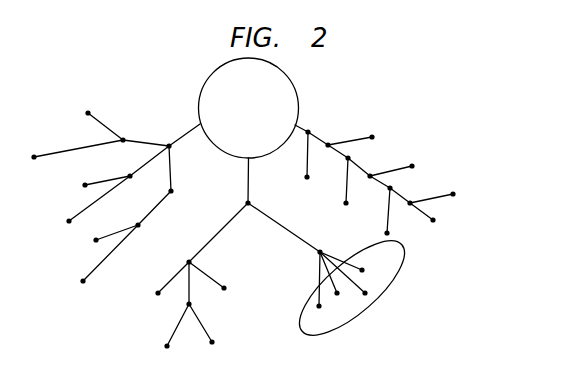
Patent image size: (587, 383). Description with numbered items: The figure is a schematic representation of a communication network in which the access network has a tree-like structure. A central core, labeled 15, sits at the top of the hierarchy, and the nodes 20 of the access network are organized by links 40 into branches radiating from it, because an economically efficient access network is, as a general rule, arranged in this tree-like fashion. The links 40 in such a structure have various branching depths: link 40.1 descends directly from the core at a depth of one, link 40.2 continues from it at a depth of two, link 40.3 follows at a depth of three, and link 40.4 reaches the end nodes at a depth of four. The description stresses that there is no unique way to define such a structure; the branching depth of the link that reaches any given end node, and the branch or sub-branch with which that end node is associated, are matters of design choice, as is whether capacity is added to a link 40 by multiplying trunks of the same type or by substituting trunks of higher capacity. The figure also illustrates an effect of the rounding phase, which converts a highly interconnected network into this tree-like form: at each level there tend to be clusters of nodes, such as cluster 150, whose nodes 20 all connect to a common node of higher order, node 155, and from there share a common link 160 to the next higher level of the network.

The core 15 is at (197, 100).
The node 20 is at (88, 112).
The link 40 is at (173, 181).
The link of branching depth one 40.1 is at (247, 186).
The link of branching depth two 40.2 is at (218, 233).
The link of branching depth three 40.3 is at (192, 288).
The link of branching depth four 40.4 is at (173, 330).
The cluster of nodes 150 is at (393, 280).
The common node of higher order 155 is at (318, 257).
The common link 160 is at (281, 227).